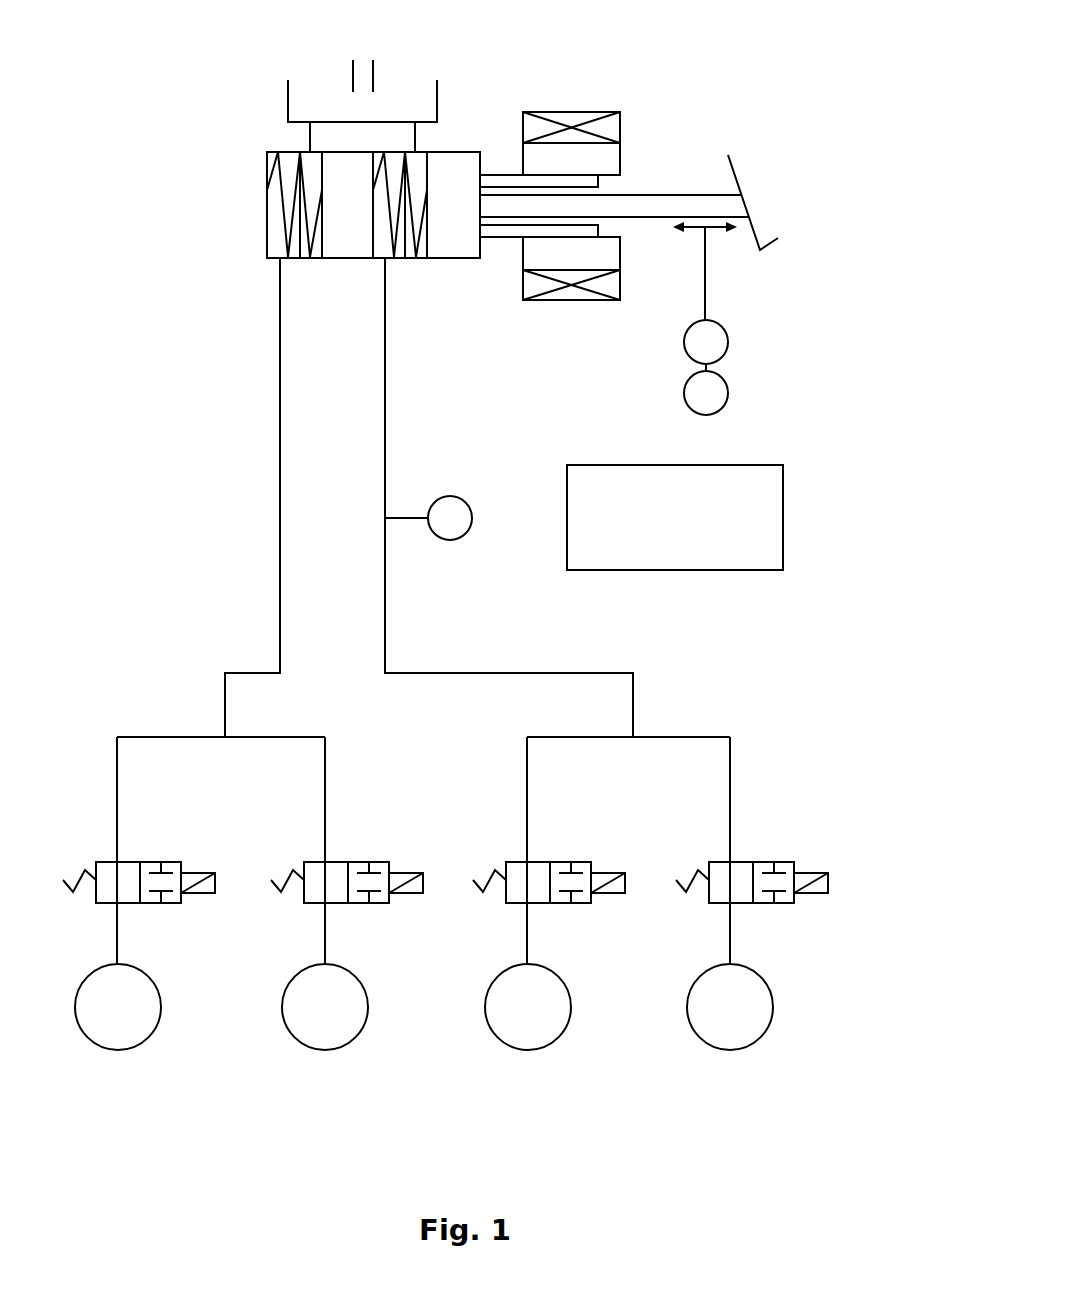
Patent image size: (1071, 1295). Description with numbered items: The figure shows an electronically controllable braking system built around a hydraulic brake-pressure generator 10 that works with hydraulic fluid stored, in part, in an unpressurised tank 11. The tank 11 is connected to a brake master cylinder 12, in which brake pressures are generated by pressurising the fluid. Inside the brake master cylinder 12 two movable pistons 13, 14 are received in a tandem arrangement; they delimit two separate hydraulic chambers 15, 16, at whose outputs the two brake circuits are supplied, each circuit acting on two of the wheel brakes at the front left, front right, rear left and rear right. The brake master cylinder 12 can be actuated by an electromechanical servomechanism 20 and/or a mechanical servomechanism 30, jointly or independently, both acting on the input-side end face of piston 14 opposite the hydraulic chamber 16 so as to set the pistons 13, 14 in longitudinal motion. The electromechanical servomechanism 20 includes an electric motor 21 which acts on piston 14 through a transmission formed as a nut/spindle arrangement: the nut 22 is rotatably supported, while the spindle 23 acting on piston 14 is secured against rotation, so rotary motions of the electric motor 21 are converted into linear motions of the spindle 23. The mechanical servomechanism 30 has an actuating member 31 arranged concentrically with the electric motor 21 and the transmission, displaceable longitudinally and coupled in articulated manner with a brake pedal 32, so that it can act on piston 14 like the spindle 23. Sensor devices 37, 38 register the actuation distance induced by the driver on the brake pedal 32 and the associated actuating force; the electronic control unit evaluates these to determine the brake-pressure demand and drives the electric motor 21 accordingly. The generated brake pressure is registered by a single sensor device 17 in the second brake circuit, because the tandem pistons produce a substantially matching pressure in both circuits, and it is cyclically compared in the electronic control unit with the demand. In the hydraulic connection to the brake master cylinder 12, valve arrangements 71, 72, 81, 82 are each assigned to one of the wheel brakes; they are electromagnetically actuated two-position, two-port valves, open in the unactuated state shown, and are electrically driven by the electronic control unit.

The hydraulic brake-pressure generator 10 is at (449, 525).
The unpressurised tank 11 is at (322, 92).
The brake master cylinder 12 is at (314, 199).
The piston 13 is at (336, 219).
The piston 14 is at (442, 219).
The hydraulic chamber 15 is at (277, 247).
The hydraulic chamber 16 is at (378, 253).
The sensor device 17 is at (465, 500).
The electromechanical servomechanism 20 is at (555, 205).
The electric motor 21 is at (570, 285).
The nut 22 is at (597, 247).
The spindle 23 is at (503, 237).
The mechanical servomechanism 30 is at (629, 242).
The actuating member 31 is at (652, 208).
The brake pedal 32 is at (737, 178).
The sensor device 37 is at (717, 340).
The sensor device 38 is at (717, 387).
The valve arrangement 71 is at (183, 861).
The valve arrangement 72 is at (391, 861).
The valve arrangement 81 is at (593, 861).
The valve arrangement 82 is at (796, 861).